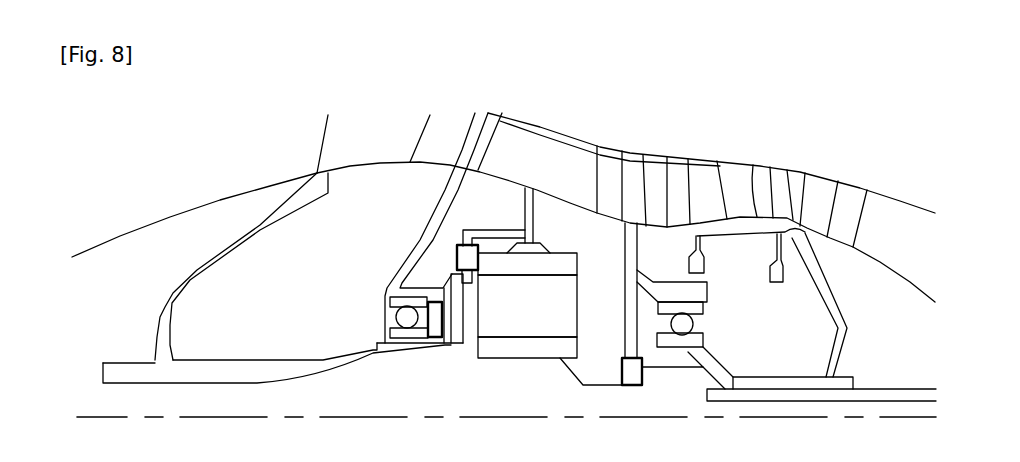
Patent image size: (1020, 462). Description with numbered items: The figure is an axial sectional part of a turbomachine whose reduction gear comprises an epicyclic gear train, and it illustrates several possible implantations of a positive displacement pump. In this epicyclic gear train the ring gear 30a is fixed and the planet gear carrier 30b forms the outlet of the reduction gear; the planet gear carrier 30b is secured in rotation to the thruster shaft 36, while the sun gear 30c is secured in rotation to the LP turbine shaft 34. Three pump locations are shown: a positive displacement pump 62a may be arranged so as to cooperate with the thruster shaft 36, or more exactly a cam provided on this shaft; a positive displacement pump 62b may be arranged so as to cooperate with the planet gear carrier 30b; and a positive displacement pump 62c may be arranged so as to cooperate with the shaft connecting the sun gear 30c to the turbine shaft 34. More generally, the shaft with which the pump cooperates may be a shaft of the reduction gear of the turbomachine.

The ring gear 30a is at (578, 266).
The planet gear carrier 30b is at (458, 284).
The sun gear 30c is at (543, 353).
The LP turbine shaft 34 is at (708, 375).
The thruster shaft 36 is at (337, 363).
The positive displacement pump 62a is at (445, 345).
The positive displacement pump 62b is at (470, 248).
The positive displacement pump 62c is at (635, 378).